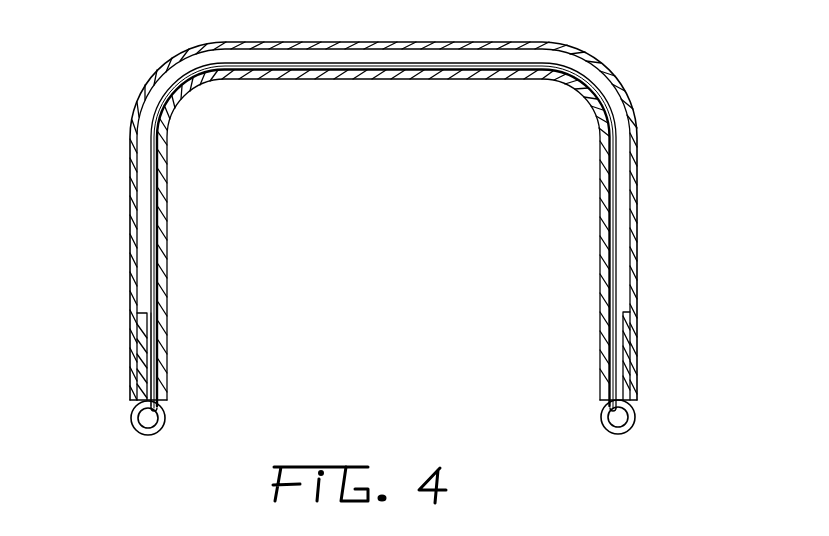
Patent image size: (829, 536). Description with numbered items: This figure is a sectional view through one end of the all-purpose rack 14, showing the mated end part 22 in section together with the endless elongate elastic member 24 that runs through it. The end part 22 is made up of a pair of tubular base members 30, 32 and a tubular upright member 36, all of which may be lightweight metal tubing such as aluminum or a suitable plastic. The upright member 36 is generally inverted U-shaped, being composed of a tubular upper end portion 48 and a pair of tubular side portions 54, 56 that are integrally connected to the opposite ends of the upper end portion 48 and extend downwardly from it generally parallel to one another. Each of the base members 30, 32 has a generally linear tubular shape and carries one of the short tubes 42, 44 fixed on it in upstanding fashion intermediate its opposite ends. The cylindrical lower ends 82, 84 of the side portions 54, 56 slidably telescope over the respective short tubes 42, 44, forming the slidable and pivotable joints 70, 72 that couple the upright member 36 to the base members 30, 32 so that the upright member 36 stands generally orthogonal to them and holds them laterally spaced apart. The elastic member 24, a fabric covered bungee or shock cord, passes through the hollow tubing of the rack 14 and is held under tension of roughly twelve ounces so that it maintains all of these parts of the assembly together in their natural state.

The all-purpose rack 14 is at (652, 100).
The end part 22 is at (601, 62).
The endless elongate elastic member 24 is at (372, 80).
The tubular base member 30 is at (165, 417).
The tubular base member 32 is at (637, 420).
The tubular upright member 36 is at (687, 216).
The short tube 42 is at (157, 360).
The short tube 44 is at (627, 350).
The tubular upper end portion 48 is at (361, 42).
The tubular side portion 54 is at (130, 210).
The tubular side portion 56 is at (637, 183).
The slidable and pivotable joint 70 is at (170, 331).
The slidable and pivotable joint 72 is at (642, 330).
The cylindrical lower end 82 is at (132, 373).
The cylindrical lower end 84 is at (600, 370).